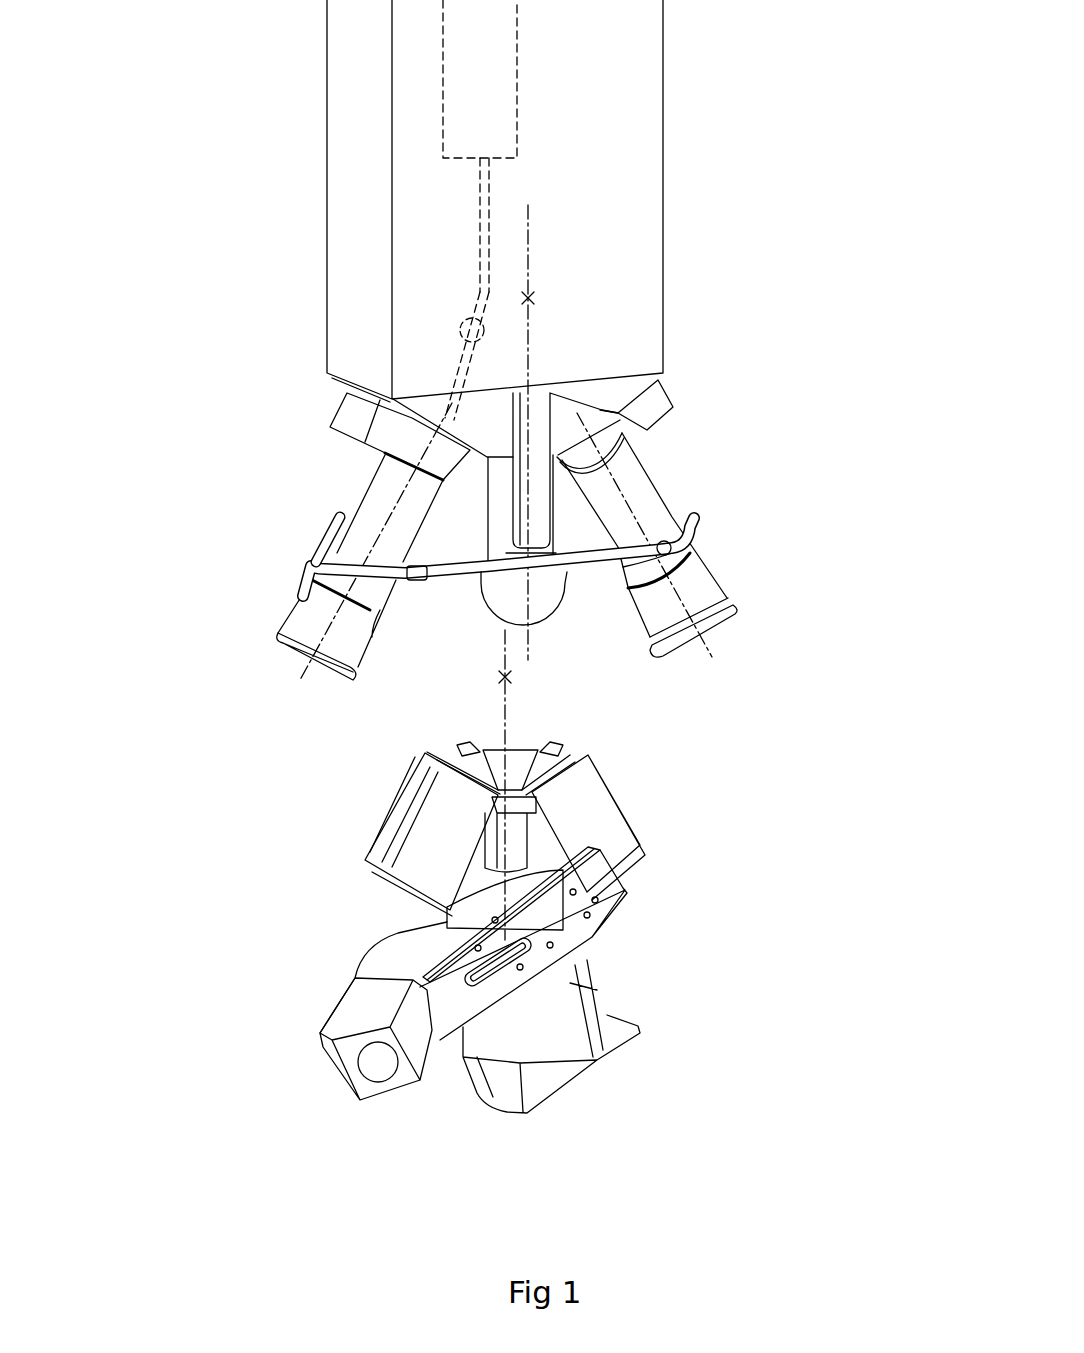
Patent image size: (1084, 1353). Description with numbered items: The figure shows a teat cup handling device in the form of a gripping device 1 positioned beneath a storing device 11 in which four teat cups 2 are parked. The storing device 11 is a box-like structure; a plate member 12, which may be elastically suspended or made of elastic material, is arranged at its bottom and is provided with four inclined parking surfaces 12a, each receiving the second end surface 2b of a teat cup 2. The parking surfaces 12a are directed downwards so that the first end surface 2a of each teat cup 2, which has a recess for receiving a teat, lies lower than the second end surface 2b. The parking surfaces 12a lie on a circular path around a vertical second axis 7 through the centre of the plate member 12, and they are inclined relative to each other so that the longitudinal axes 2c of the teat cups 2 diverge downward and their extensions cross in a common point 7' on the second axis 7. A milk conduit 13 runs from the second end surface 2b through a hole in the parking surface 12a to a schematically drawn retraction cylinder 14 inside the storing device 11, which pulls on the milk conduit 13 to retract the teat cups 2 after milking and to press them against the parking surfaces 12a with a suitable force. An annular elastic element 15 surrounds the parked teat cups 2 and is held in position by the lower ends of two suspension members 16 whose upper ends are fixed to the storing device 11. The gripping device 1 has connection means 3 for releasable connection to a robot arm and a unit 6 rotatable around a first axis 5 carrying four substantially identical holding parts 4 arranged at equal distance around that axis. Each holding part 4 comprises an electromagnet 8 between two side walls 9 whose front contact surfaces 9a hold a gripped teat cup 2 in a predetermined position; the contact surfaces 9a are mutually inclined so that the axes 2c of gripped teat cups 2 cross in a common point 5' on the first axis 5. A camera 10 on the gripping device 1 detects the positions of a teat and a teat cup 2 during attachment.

The gripping device 1 is at (685, 898).
The teat cup 2 is at (368, 525).
The first end surface 2a is at (296, 650).
The second end surface 2b is at (620, 419).
The longitudinal axis 2c is at (640, 502).
The connection means 3 is at (368, 1062).
The holding part 4 is at (403, 785).
The first axis 5 is at (472, 785).
The common point 5' is at (479, 651).
The unit 6 is at (480, 887).
The second axis 7 is at (555, 427).
The common point 7' is at (568, 274).
The electromagnet 8 is at (548, 747).
The side wall 9 is at (598, 777).
The front contact surface 9a is at (400, 856).
The camera 10 is at (562, 1057).
The storing device 11 is at (715, 215).
The plate member 12 is at (600, 412).
The parking surface 12a is at (425, 418).
The milk conduit 13 is at (462, 378).
The retraction cylinder 14 is at (485, 93).
The annular elastic element 15 is at (320, 560).
The suspension member 16 is at (539, 403).